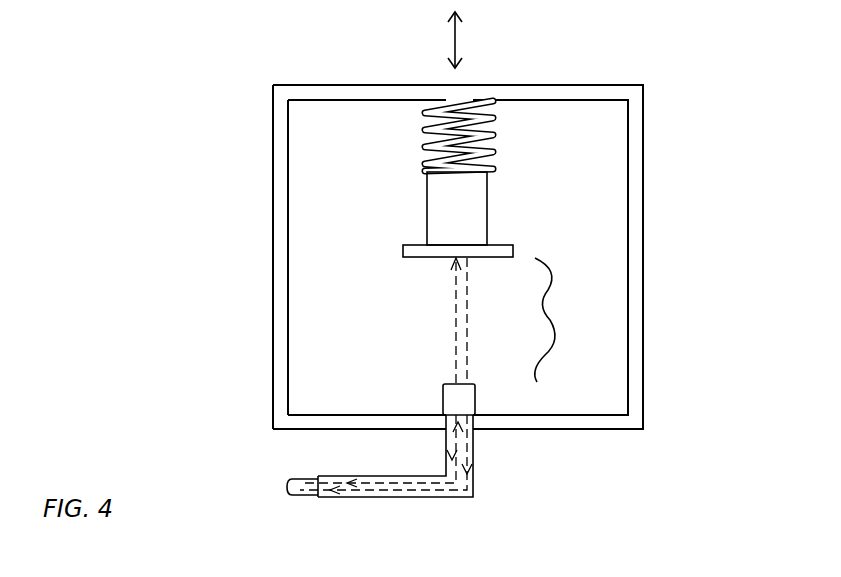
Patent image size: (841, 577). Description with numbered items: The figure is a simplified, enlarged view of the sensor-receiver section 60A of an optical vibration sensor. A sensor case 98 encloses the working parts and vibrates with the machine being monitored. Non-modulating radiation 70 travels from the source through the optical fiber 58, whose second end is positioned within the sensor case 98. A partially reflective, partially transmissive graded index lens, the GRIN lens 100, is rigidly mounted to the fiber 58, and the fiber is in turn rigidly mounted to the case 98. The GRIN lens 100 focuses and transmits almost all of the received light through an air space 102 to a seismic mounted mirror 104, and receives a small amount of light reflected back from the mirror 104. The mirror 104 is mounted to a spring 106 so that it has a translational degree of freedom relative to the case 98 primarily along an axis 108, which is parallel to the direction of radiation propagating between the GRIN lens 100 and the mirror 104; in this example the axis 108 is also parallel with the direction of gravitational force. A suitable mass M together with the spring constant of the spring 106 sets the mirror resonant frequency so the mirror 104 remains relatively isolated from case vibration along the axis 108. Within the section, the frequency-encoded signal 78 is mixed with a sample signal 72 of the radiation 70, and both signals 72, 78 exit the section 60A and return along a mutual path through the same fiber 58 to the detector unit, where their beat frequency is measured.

The sensor-receiver section 60A is at (291, 79).
The sensor case 98 is at (645, 118).
The axis 108 is at (455, 40).
The spring 106 is at (422, 147).
The mass M is at (488, 198).
The seismic mounted mirror 104 is at (514, 252).
The non-modulating radiation 70 is at (450, 320).
The air space 102 is at (558, 318).
The partially reflective GRIN lens 100 is at (441, 400).
The frequency-encoded signal 78 is at (415, 493).
The sample signal 72 is at (400, 485).
The optical fiber 58 is at (319, 498).